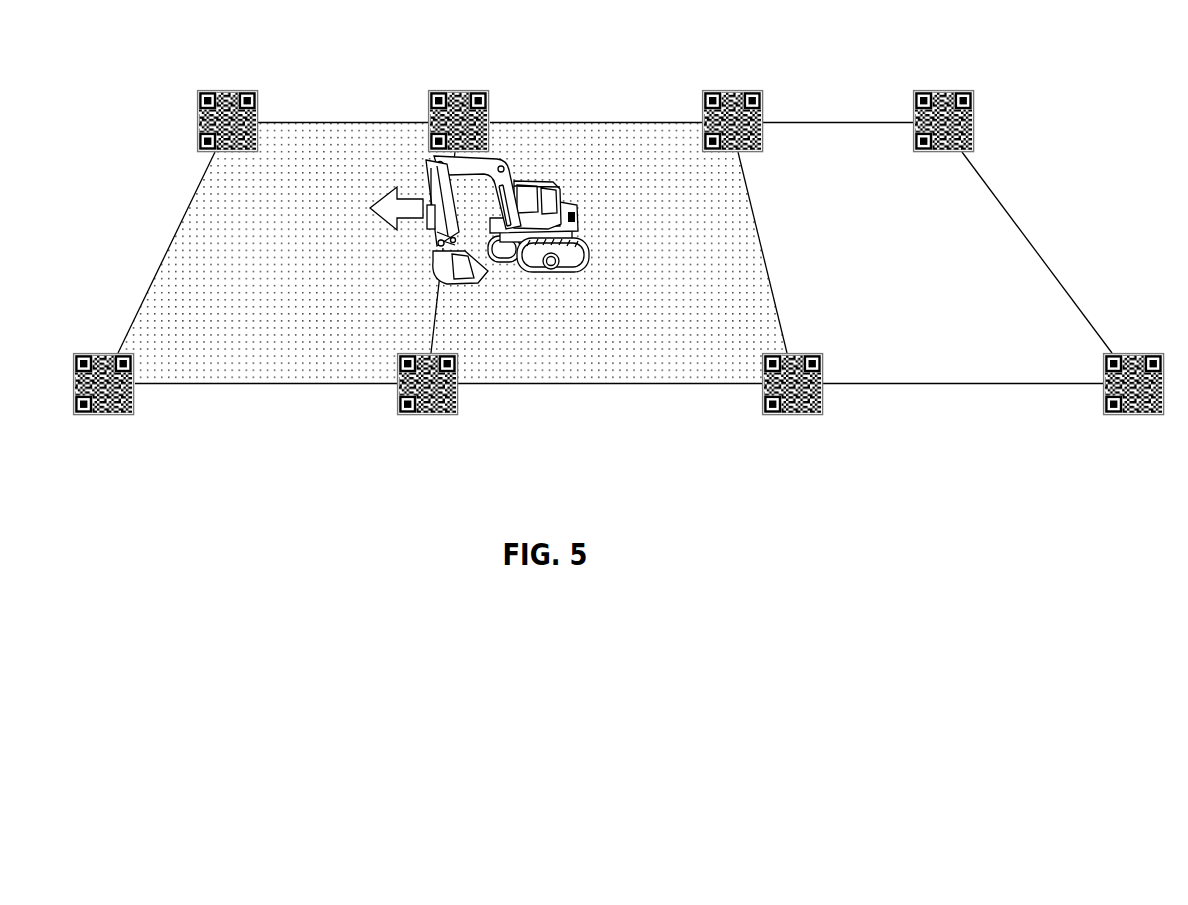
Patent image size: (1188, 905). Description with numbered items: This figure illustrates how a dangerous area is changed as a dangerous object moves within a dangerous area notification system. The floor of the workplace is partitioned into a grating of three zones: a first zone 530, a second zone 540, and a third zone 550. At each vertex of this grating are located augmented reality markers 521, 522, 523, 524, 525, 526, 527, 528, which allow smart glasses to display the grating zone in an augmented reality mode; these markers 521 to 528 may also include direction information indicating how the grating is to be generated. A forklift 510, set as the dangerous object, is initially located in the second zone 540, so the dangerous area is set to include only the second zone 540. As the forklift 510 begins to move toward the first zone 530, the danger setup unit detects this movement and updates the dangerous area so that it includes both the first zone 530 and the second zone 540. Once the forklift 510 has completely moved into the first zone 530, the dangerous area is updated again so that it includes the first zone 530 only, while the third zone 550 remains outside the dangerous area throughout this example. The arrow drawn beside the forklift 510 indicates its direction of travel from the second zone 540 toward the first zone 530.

The forklift 510 is at (532, 178).
The augmented reality marker 521 is at (103, 417).
The augmented reality marker 522 is at (427, 417).
The augmented reality marker 523 is at (790, 417).
The augmented reality marker 524 is at (1132, 417).
The augmented reality marker 525 is at (227, 90).
The augmented reality marker 526 is at (457, 90).
The augmented reality marker 527 is at (732, 90).
The augmented reality marker 528 is at (942, 90).
The first zone 530 is at (280, 370).
The second zone 540 is at (607, 370).
The third zone 550 is at (949, 370).